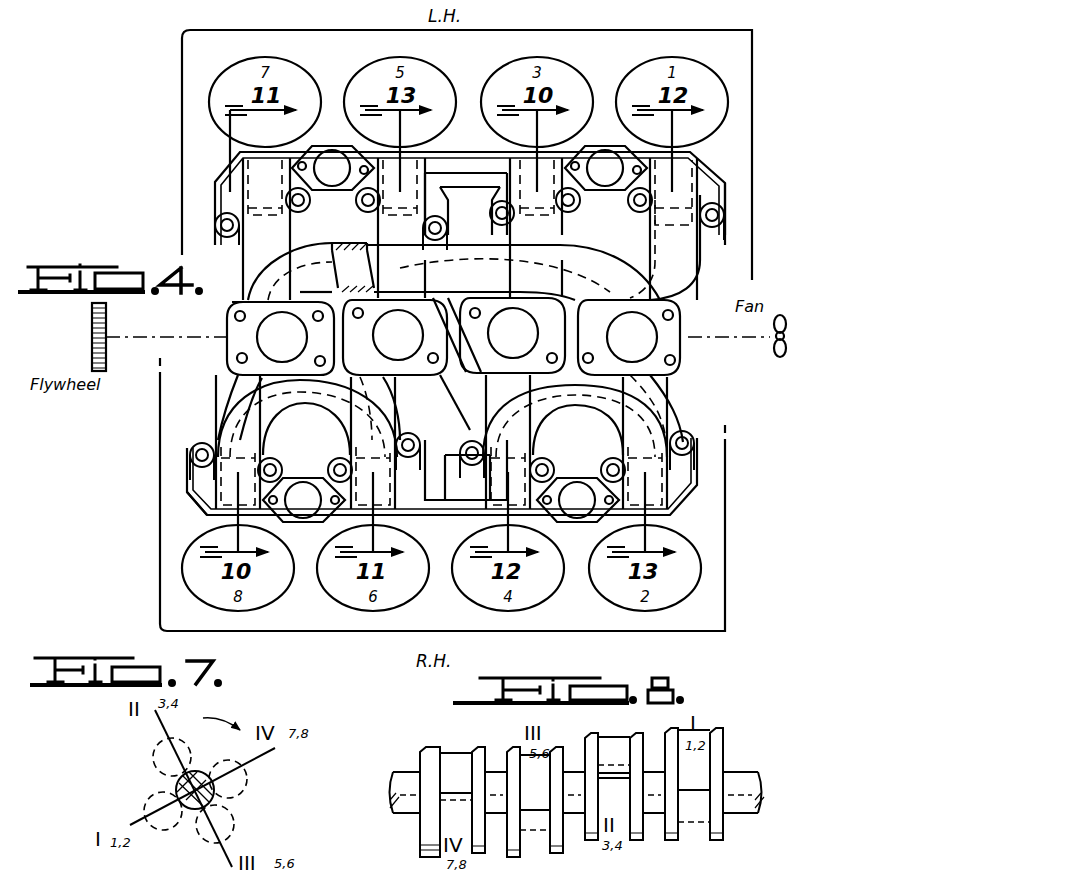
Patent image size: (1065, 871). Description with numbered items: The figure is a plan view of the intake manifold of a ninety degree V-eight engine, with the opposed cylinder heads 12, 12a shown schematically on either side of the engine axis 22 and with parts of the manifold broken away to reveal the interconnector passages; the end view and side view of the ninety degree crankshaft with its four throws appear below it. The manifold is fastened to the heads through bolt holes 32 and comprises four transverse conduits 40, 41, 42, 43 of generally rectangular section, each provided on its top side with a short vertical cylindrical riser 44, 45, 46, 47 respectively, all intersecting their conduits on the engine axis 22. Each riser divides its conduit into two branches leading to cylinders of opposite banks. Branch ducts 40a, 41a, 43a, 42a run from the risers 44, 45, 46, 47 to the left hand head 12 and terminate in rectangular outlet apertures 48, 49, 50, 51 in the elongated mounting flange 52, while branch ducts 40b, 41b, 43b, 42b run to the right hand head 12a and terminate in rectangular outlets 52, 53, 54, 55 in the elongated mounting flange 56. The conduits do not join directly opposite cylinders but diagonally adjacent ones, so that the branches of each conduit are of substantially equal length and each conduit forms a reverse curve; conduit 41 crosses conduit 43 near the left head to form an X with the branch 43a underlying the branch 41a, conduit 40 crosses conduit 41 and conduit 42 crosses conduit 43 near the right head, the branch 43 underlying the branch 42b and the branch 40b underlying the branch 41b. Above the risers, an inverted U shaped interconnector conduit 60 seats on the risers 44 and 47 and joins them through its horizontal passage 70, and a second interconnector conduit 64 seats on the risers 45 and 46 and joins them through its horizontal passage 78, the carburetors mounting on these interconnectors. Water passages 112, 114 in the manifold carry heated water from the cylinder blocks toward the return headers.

The cylinder head 12 is at (666, 42).
The cylinder head 12a is at (677, 622).
The bolt holes 32 is at (225, 233).
The rectangular outlet aperture 48 is at (700, 156).
The rectangular outlet aperture 49 is at (447, 159).
The rectangular outlet aperture 50 is at (572, 150).
The rectangular outlet aperture 51 is at (302, 149).
The water passage 114 is at (339, 166).
The water passage 112 is at (302, 518).
The elongated mounting flange 52 is at (705, 178).
The rectangular outlet 53 is at (695, 466).
The rectangular outlet 54 is at (203, 507).
The rectangular outlet 55 is at (398, 502).
The elongated mounting flange 56 is at (682, 500).
The branch duct 42a is at (290, 251).
The branch duct 41a is at (365, 228).
The branch duct 43a is at (522, 230).
The interconnector conduit 60 is at (592, 245).
The horizontal passage 70 is at (513, 268).
The conduit 40 is at (690, 292).
The branch duct 40a is at (690, 263).
The branch duct 40b is at (530, 416).
The engine axis 22 is at (745, 340).
The riser passage 47 is at (280, 338).
The riser passage 46 is at (395, 337).
The riser passage 45 is at (512, 335).
The riser passage 44 is at (629, 337).
The interconnector conduit 64 is at (440, 346).
The horizontal passage 78 is at (460, 370).
The conduit 43 is at (307, 418).
The branch duct 43b is at (230, 381).
The conduit 42 is at (408, 442).
The branch duct 42b is at (346, 430).
The conduit 41 is at (668, 406).
The branch duct 41b is at (656, 388).